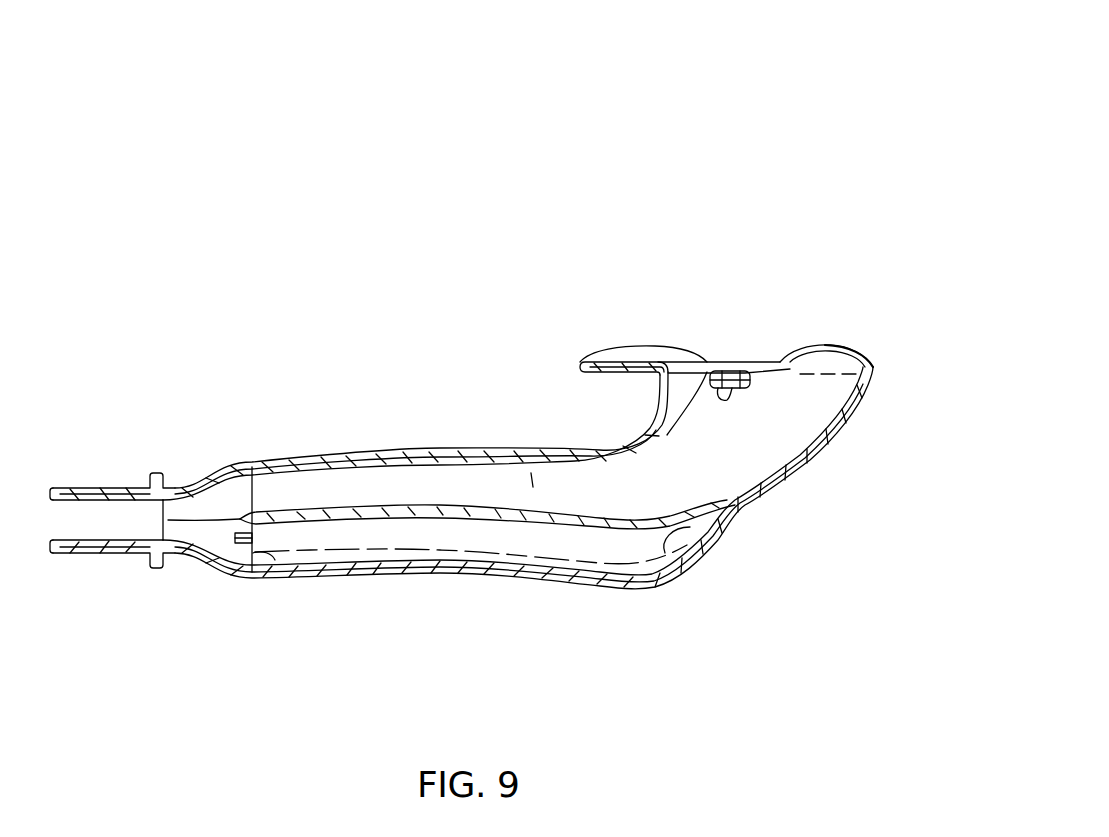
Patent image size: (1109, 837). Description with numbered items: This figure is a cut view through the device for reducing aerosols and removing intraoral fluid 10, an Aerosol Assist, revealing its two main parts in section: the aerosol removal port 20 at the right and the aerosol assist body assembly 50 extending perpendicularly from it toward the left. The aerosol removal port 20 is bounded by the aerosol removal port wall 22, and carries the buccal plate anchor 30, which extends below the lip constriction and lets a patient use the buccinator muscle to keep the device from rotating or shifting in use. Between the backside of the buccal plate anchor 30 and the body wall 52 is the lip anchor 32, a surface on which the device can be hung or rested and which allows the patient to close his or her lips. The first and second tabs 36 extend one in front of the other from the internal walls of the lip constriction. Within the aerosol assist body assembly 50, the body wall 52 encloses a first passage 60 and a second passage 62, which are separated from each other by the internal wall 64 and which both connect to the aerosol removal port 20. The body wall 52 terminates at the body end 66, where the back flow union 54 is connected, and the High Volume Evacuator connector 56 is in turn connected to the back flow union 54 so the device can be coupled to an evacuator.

The device for reducing aerosols and removing intraoral fluid 10 is at (653, 173).
The aerosol removal port 20 is at (780, 232).
The aerosol removal port wall 22 is at (858, 407).
The buccal plate anchor 30 is at (580, 366).
The lip anchor 32 is at (657, 397).
The first and second tabs 36 is at (707, 362).
The aerosol assist body assembly 50 is at (289, 377).
The body wall 52 is at (392, 563).
The back flow union 54 is at (222, 467).
The High Volume Evacuator connector 56 is at (100, 498).
The first passage 60 is at (687, 525).
The second passage 62 is at (487, 490).
The internal wall 64 is at (323, 520).
The body end 66 is at (275, 560).